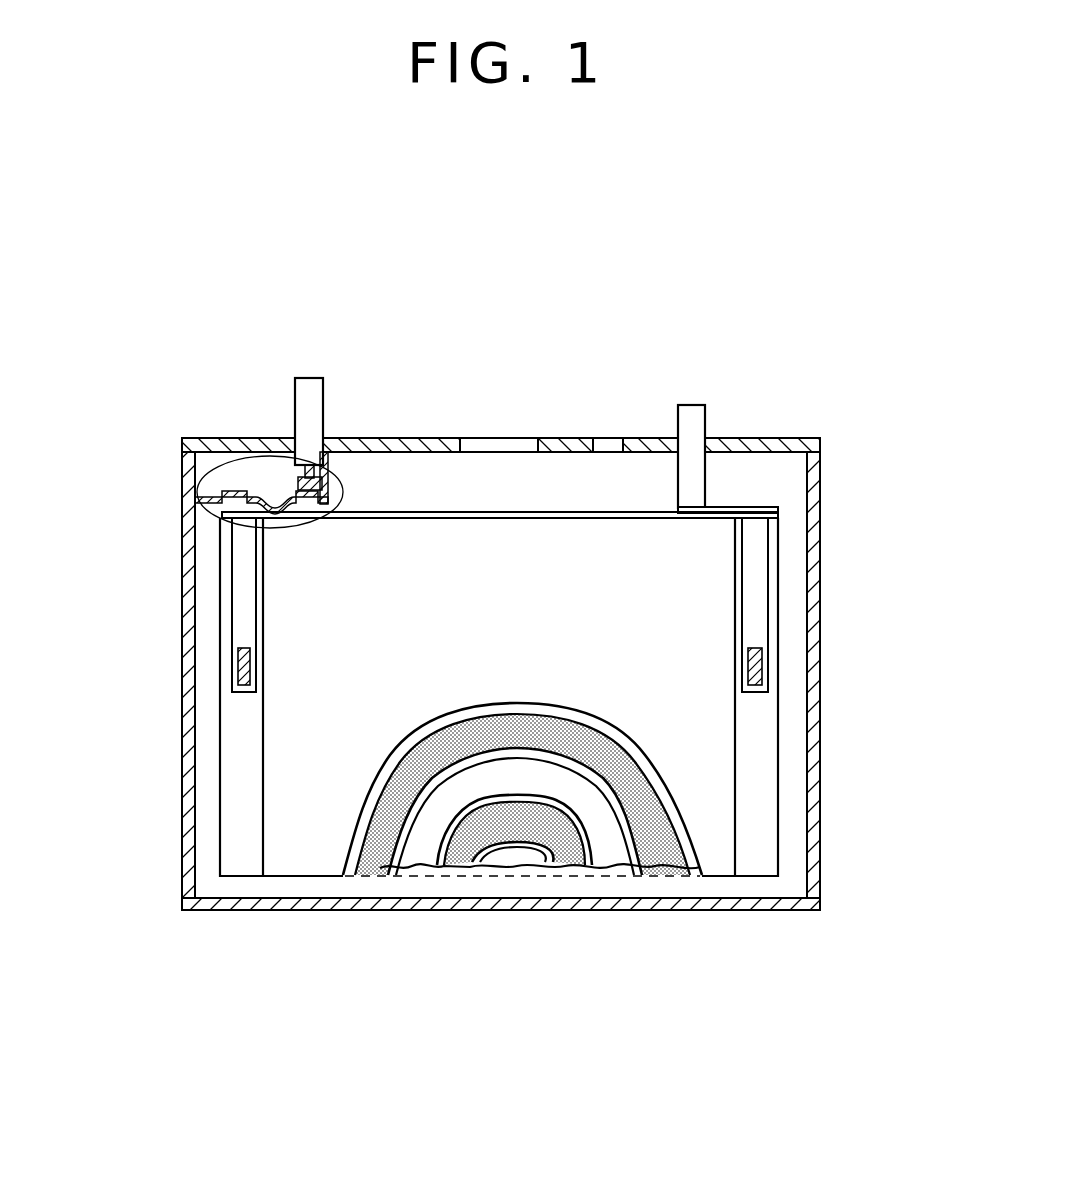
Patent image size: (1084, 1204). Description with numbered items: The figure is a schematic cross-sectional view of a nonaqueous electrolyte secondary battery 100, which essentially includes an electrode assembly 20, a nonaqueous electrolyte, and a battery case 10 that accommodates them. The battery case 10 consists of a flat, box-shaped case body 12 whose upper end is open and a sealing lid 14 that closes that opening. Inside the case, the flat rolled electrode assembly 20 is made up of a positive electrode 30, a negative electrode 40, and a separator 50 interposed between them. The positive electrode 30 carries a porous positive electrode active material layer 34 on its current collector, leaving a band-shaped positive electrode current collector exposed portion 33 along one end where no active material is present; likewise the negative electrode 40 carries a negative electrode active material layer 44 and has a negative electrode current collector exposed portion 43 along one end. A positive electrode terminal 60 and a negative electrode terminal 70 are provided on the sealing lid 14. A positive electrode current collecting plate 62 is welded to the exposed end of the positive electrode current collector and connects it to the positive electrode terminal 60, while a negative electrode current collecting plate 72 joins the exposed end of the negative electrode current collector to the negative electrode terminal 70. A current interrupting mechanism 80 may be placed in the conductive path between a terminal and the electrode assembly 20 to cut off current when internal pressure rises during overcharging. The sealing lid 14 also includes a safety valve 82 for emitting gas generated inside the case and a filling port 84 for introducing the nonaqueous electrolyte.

The nonaqueous electrolyte secondary battery 100 is at (817, 322).
The battery case 10 is at (820, 625).
The case body 12 is at (812, 848).
The sealing lid 14 is at (765, 445).
The electrode assembly 20 is at (430, 545).
The positive electrode 30 is at (357, 855).
The positive electrode current collector exposed portion 33 is at (242, 803).
The positive electrode active material layer 34 is at (522, 789).
The negative electrode 40 is at (459, 855).
The negative electrode current collector exposed portion 43 is at (757, 760).
The negative electrode active material layer 44 is at (514, 830).
The separator 50 is at (296, 850).
The positive electrode terminal 60 is at (312, 388).
The positive electrode current collecting plate 62 is at (245, 592).
The negative electrode terminal 70 is at (688, 425).
The negative electrode current collecting plate 72 is at (757, 540).
The current interrupting mechanism 80 is at (212, 463).
The safety valve 82 is at (516, 440).
The filling port 84 is at (605, 440).